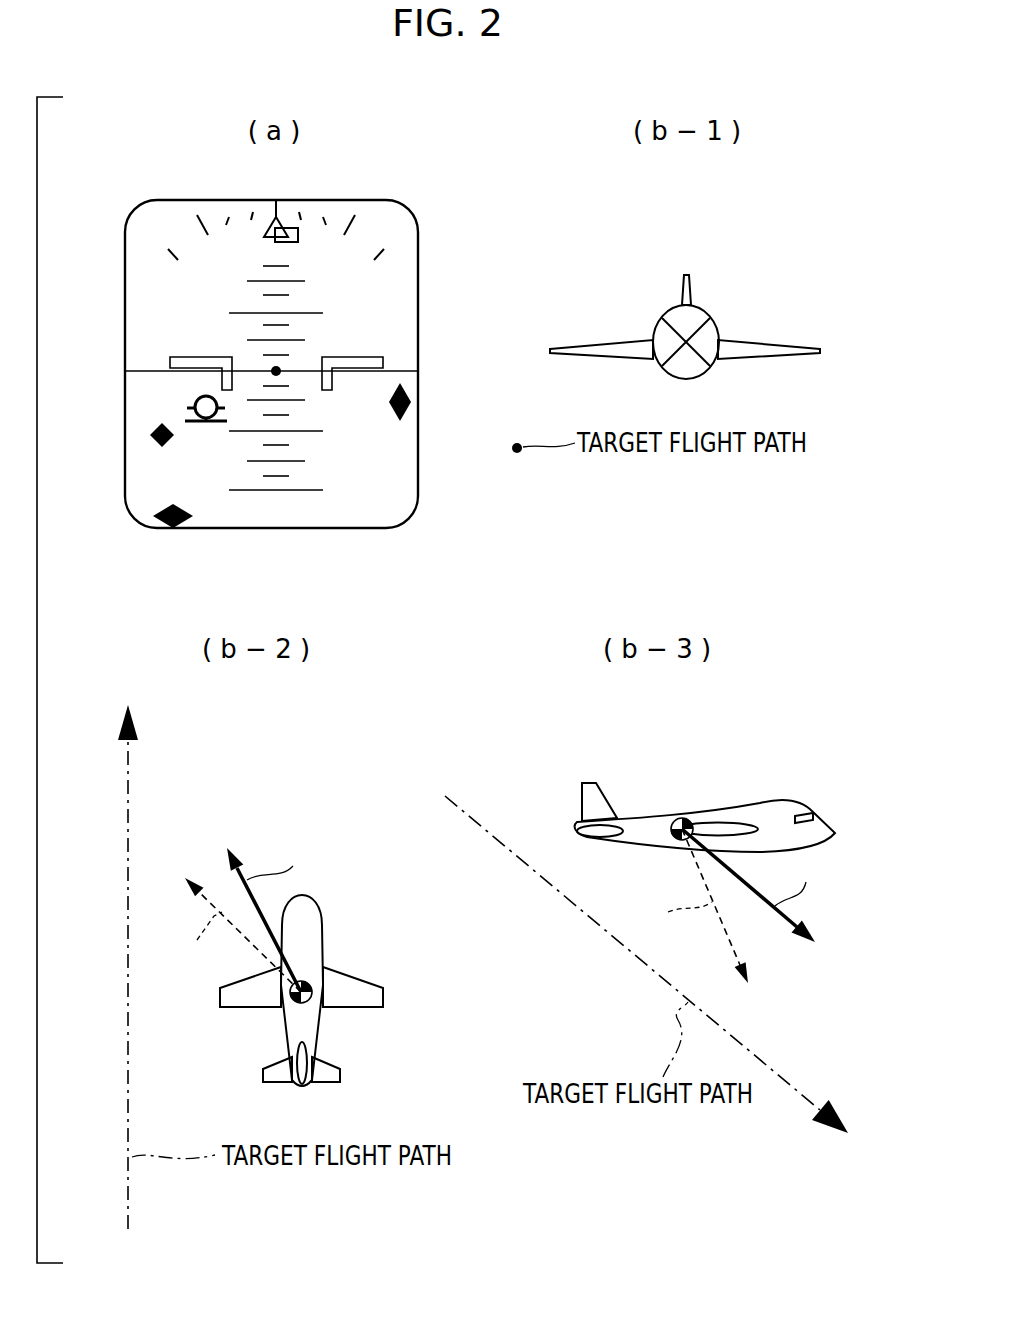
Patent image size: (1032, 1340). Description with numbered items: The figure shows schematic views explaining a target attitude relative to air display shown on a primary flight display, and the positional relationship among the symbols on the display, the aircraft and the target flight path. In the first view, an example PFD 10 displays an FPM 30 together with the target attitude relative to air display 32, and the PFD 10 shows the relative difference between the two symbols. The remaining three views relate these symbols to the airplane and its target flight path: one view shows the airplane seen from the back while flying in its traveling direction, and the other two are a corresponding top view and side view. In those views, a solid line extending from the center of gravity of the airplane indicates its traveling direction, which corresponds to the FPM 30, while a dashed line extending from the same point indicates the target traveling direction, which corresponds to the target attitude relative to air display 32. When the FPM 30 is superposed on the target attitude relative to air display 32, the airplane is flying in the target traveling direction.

The PFD 10 is at (438, 219).
The FPM 30 is at (194, 406).
The target attitude relative to air display 32 is at (150, 435).